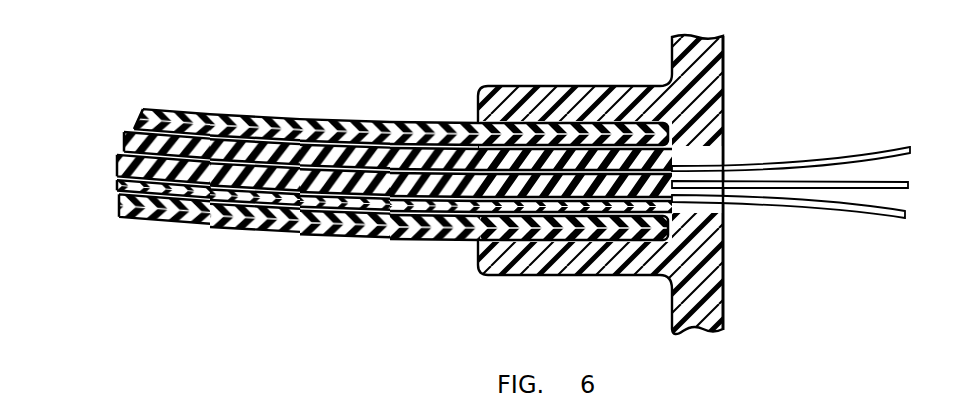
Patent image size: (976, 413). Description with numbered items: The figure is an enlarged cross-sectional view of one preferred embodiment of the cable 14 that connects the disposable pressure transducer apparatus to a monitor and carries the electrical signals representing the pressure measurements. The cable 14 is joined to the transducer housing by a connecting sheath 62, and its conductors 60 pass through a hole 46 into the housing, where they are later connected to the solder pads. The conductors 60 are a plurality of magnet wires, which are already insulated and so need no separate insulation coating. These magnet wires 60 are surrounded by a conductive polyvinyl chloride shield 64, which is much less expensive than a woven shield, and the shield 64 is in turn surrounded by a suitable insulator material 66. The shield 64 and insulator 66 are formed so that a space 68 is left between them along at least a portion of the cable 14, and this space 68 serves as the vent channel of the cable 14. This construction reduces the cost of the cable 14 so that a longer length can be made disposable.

The cable 14 is at (396, 52).
The hole 46 is at (707, 153).
The magnet wire conductors 60 is at (912, 148).
The connecting sheath 62 is at (590, 92).
The conductive polyvinyl chloride shield 64 is at (118, 160).
The insulator material 66 is at (301, 127).
The space 68 is at (377, 213).